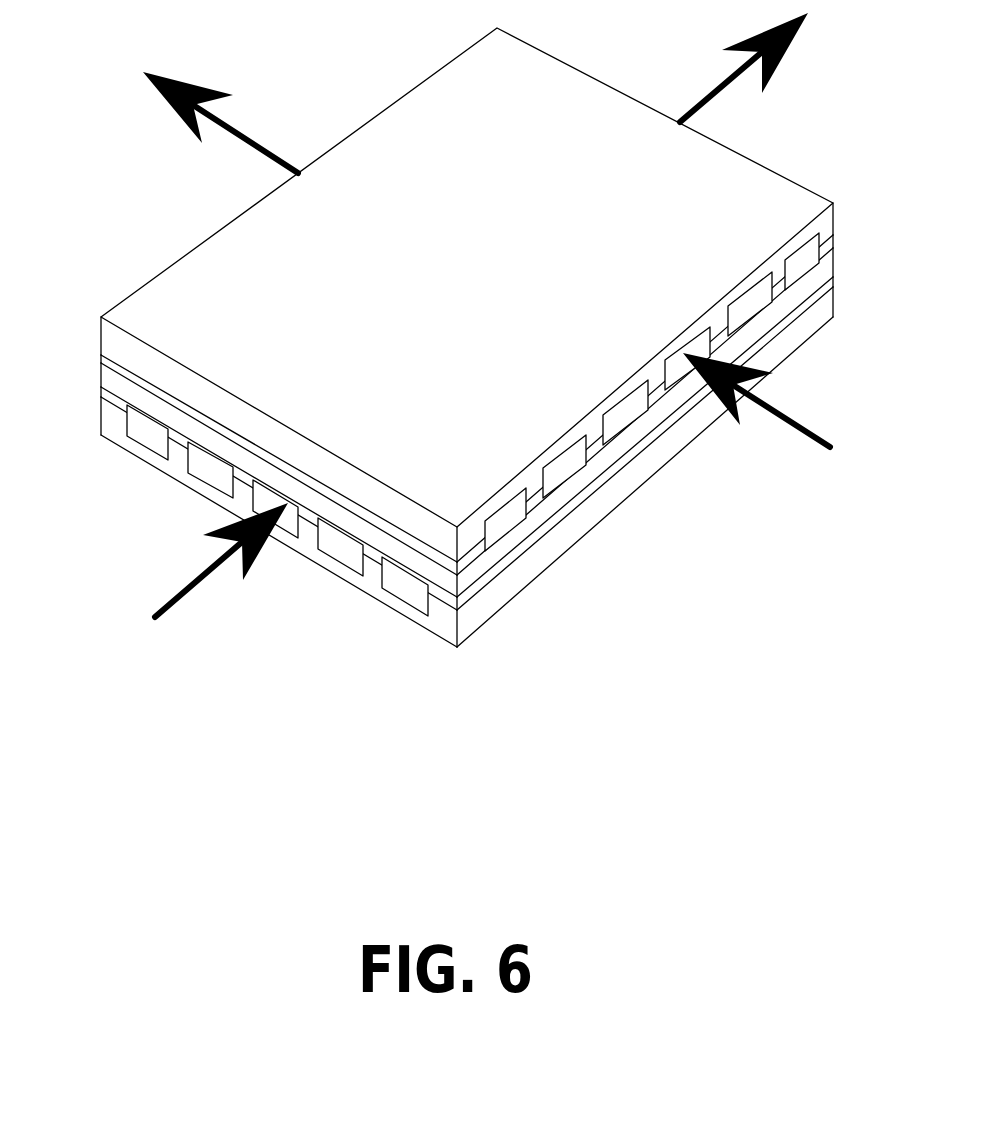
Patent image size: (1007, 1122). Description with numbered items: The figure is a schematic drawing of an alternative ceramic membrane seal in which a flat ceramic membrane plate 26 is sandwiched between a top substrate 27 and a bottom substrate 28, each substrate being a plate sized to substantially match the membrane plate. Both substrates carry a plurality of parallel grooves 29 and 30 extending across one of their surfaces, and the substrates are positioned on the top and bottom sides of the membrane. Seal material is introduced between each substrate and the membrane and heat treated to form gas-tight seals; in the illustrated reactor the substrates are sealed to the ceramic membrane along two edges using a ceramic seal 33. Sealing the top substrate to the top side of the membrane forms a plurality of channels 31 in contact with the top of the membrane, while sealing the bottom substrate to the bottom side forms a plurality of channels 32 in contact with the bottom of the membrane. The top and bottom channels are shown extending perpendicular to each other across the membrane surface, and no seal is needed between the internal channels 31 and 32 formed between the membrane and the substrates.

The ceramic membrane plate 26 is at (545, 511).
The top substrate 27 is at (775, 196).
The bottom substrate 28 is at (450, 616).
The parallel grooves 29 is at (498, 512).
The parallel grooves 30 is at (405, 580).
The channels 31 is at (557, 474).
The channels 32 is at (340, 546).
The ceramic seal 33 is at (827, 245).